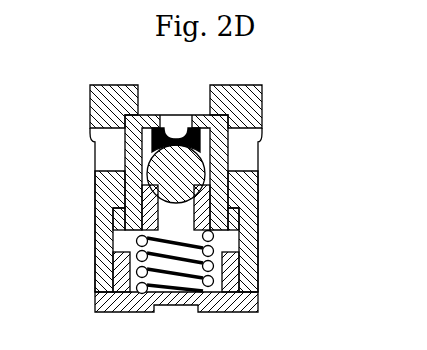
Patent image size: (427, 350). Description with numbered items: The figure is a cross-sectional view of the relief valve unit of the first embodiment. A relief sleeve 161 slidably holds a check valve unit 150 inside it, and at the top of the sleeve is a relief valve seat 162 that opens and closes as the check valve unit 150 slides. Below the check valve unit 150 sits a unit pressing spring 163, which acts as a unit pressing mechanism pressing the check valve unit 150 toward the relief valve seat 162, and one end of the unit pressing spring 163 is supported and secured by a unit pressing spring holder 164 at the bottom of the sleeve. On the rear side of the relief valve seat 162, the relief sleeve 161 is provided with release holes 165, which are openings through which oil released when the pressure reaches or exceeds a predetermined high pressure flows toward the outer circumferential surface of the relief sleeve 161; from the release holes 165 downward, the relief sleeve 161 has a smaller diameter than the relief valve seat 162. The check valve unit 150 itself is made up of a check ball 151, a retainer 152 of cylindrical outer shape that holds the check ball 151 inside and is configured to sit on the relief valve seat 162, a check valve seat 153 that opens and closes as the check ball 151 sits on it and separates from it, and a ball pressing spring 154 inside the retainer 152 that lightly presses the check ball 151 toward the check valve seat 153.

The check valve unit 150 is at (256, 173).
The check ball 151 is at (208, 172).
The retainer 152 is at (223, 142).
The check valve seat 153 is at (212, 212).
The ball pressing spring 154 is at (208, 146).
The relief sleeve 161 is at (102, 195).
The relief valve seat 162 is at (127, 84).
The unit pressing spring 163 is at (137, 273).
The unit pressing spring holder 164 is at (100, 299).
The release holes 165 is at (101, 159).